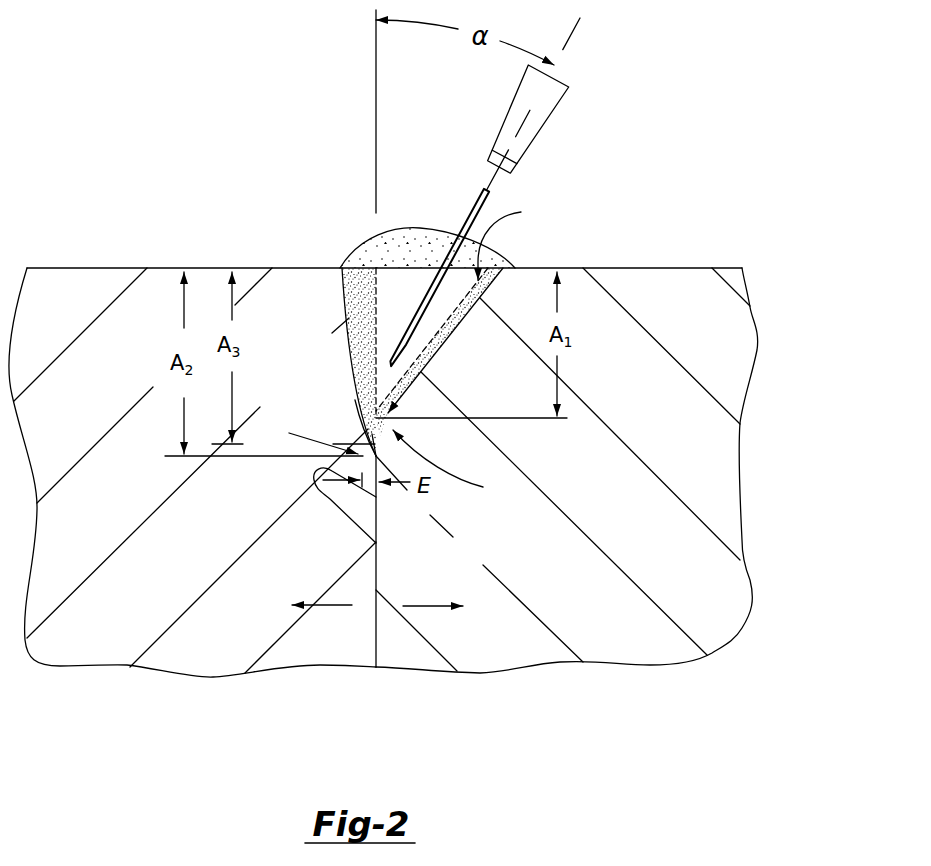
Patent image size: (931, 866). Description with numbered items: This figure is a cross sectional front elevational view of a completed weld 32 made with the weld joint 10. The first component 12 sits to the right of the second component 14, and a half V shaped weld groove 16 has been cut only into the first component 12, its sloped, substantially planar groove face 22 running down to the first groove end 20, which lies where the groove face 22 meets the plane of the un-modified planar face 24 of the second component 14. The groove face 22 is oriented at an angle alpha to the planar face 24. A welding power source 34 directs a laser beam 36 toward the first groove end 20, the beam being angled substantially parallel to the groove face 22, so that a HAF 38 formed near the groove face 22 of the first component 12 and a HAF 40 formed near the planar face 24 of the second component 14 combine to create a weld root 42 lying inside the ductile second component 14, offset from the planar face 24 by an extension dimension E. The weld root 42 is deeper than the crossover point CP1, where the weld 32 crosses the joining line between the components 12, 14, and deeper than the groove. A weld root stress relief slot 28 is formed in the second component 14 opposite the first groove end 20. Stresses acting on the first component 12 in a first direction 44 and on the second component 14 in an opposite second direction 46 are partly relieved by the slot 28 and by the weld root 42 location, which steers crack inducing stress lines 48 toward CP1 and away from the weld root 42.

The weld joint 10 is at (363, 239).
The first component 12 is at (686, 444).
The second component 14 is at (111, 511).
The half V shaped weld groove 16 is at (454, 297).
The first groove end 20 is at (365, 408).
The groove face 22 is at (512, 240).
The planar face 24 is at (371, 308).
The weld root stress relief slot 28 is at (340, 506).
The completed weld 32 is at (424, 237).
The welding power source 34 is at (533, 119).
The laser beam 36 is at (478, 198).
The HAF 38 is at (438, 352).
The HAF 40 is at (356, 338).
The weld root 42 is at (307, 438).
The first direction 44 is at (427, 608).
The second direction 46 is at (342, 608).
The crack inducing stress lines 48 is at (449, 467).
The crossover point CP1 is at (371, 432).